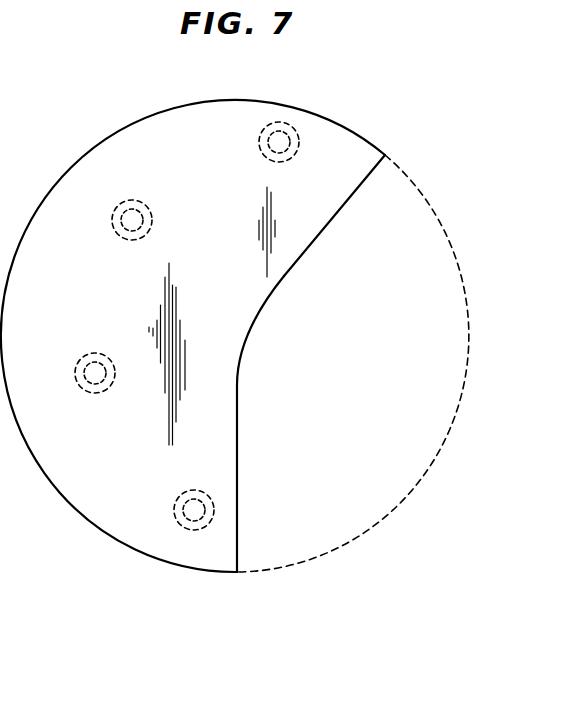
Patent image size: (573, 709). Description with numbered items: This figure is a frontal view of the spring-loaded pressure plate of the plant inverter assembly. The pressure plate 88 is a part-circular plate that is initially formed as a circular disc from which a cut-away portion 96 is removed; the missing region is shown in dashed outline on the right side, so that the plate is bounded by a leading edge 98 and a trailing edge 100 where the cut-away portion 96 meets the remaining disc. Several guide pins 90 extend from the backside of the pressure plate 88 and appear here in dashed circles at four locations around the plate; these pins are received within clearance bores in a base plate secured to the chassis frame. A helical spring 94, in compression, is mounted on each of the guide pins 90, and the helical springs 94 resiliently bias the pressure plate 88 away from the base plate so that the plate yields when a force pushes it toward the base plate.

The pressure plate 88 is at (134, 122).
The guide pins 90 is at (138, 200).
The helical spring 94 is at (146, 236).
The cut-away portion 96 is at (278, 571).
The leading edge 98 is at (318, 236).
The trailing edge 100 is at (238, 496).